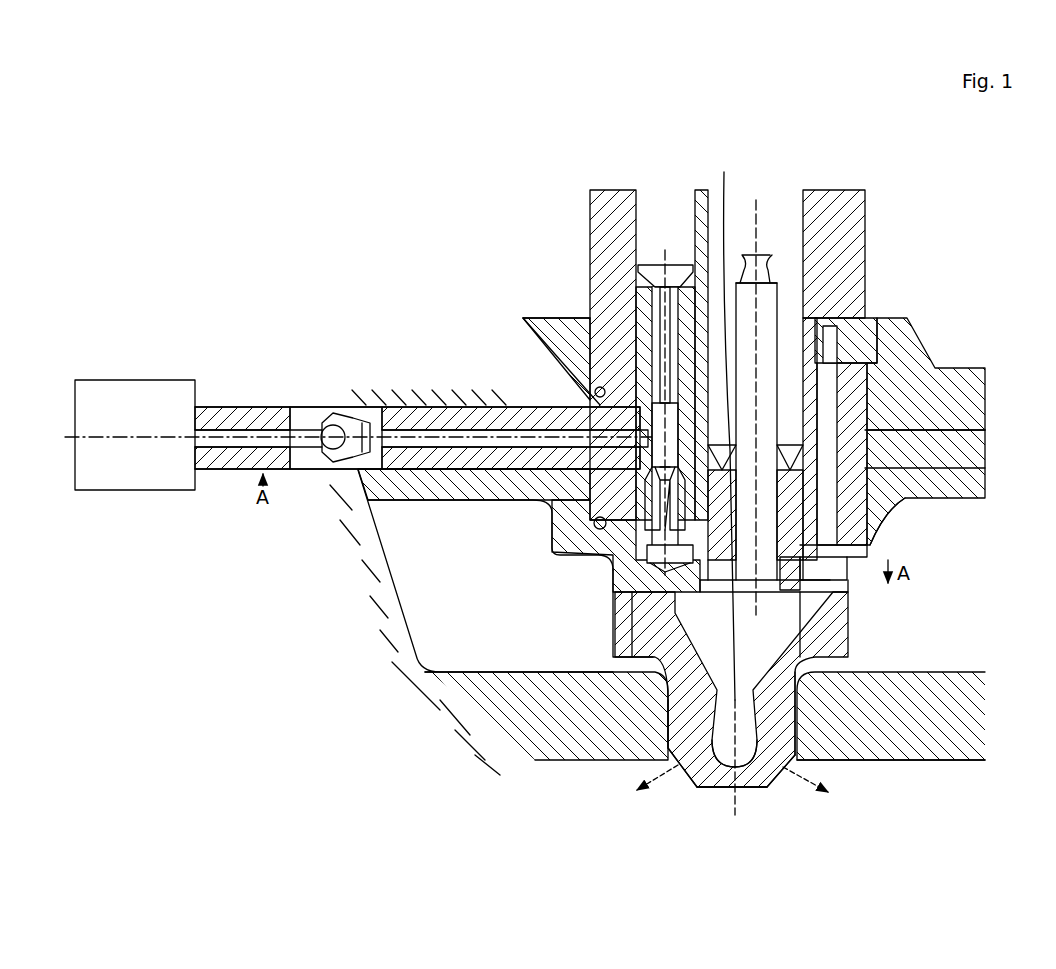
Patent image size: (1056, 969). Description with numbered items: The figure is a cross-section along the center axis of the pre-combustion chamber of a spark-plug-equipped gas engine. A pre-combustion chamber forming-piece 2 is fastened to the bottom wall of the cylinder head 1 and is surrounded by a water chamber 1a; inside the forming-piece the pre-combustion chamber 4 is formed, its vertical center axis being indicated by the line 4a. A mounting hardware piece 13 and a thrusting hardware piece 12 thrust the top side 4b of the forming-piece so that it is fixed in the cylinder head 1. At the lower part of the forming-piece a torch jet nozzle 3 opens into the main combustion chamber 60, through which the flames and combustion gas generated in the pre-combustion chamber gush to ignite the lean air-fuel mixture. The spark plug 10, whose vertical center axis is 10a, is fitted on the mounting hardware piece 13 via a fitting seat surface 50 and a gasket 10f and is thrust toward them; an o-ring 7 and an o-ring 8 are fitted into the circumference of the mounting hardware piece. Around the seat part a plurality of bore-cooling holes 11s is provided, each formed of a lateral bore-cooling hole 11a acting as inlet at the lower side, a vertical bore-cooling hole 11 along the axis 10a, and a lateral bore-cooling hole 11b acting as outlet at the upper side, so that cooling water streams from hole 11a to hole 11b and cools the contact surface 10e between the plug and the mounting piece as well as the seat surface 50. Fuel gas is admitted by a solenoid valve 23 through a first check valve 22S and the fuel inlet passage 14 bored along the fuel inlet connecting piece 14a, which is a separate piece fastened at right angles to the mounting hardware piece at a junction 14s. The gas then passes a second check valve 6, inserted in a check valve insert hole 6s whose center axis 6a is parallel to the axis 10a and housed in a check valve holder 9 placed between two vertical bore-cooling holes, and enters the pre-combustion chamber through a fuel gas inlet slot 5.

The cylinder head 1 is at (947, 407).
The water chamber 1a is at (887, 648).
The pre-combustion chamber forming-piece 2 is at (755, 782).
The torch jet nozzle 3 is at (700, 788).
The pre-combustion chamber 4 is at (660, 627).
The center axis of the pre-combustion chamber 4a is at (735, 703).
The top side of the pre-combustion chamber forming-piece 4b is at (800, 627).
The fuel gas inlet slot 5 is at (617, 600).
The second check valve 6 is at (600, 548).
The center axis of the check valve insert hole 6a is at (663, 243).
The check valve insert hole 6s is at (698, 222).
The o-ring 7 is at (594, 523).
The o-ring 8 is at (593, 397).
The check valve holder 9 is at (637, 307).
The spark plug 10 is at (950, 468).
The center axis of the spark plug 10a is at (760, 332).
The contact surface 10e is at (853, 593).
The gasket 10f is at (840, 532).
The vertical bore-cooling hole 11 is at (867, 407).
The lateral bore-cooling hole (inlet hole) 11a is at (830, 562).
The lateral bore-cooling hole (outlet hole) 11b is at (868, 363).
The bore-cooling hole 11s is at (950, 432).
The thrusting hardware piece 12 is at (861, 223).
The mounting hardware piece 13 is at (927, 500).
The fuel inlet passage 14 is at (427, 407).
The fuel inlet connecting piece 14a is at (383, 513).
The junction 14s is at (590, 320).
The first check valve 22S is at (317, 402).
The solenoid valve 23 is at (128, 492).
The fitting seat surface 50 is at (722, 421).
The main combustion chamber 60 is at (618, 866).